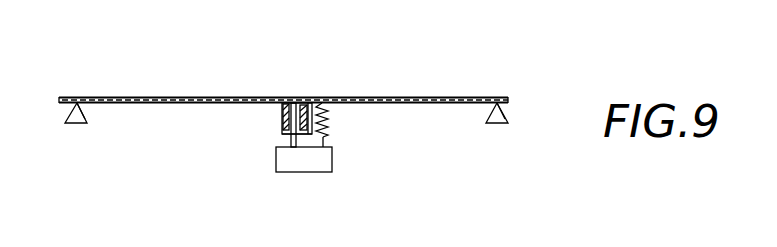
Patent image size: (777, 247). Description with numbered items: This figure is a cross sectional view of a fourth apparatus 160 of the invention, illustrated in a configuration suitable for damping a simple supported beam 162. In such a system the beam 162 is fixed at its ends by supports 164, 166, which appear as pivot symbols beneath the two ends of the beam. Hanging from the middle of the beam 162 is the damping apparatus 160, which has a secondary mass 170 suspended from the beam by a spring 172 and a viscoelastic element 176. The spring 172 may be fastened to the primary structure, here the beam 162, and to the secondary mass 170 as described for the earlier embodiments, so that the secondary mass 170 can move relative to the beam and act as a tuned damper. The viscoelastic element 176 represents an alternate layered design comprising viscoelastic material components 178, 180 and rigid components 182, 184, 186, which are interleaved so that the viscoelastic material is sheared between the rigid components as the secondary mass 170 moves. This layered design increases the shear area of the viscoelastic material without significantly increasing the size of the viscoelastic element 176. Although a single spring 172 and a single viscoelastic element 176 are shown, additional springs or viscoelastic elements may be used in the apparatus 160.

The apparatus 160 is at (264, 177).
The beam 162 is at (197, 95).
The support 164 is at (86, 117).
The support 166 is at (497, 124).
The secondary mass 170 is at (312, 173).
The spring 172 is at (327, 137).
The viscoelastic element 176 is at (282, 122).
The viscoelastic material component 178 is at (288, 101).
The viscoelastic material component 180 is at (301, 100).
The rigid component 182 is at (286, 141).
The rigid component 184 is at (283, 109).
The rigid component 186 is at (318, 99).